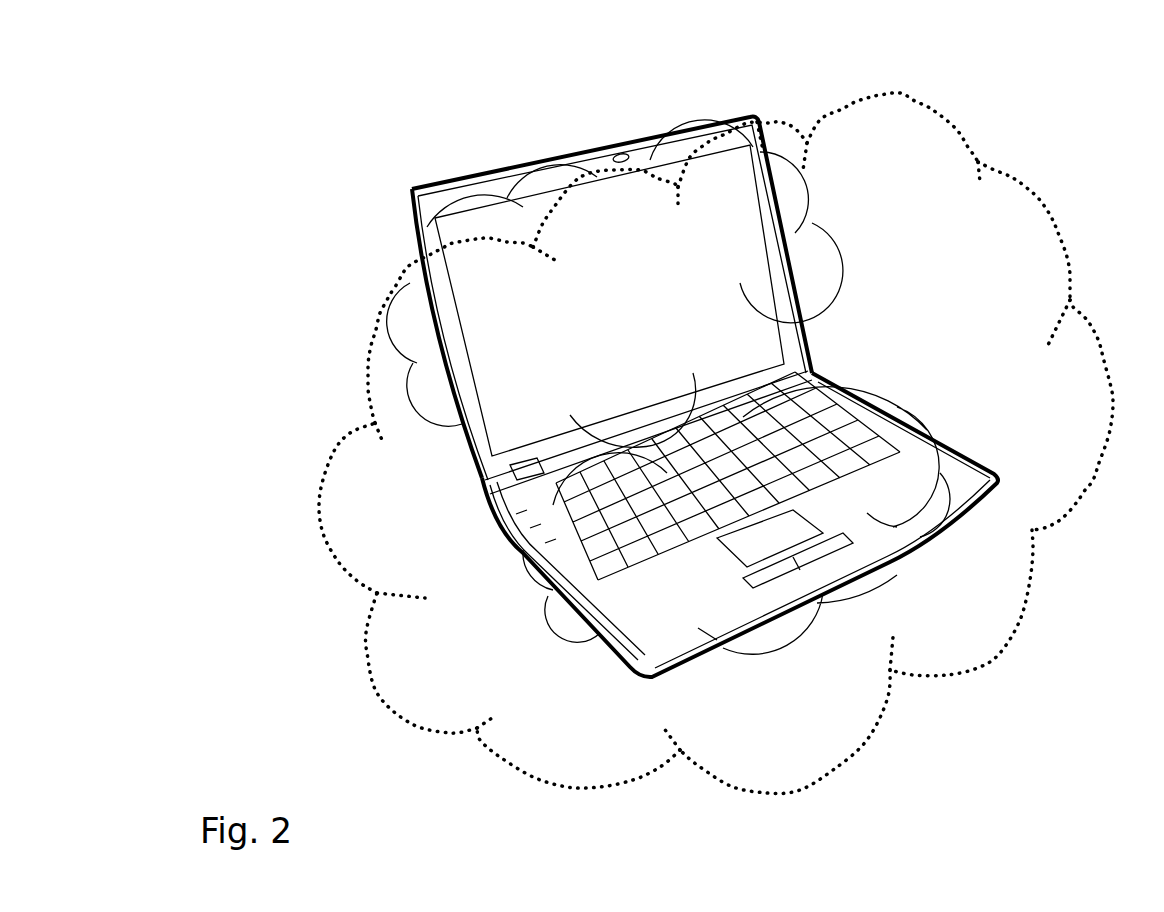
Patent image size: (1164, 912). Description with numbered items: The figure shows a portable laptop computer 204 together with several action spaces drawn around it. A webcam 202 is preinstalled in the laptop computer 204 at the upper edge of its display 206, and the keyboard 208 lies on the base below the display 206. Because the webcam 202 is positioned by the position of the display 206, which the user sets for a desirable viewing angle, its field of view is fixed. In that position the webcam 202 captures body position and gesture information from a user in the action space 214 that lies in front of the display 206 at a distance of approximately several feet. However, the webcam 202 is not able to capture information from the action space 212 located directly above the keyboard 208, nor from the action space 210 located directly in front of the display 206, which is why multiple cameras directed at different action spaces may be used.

The webcam 202 is at (610, 157).
The laptop computer 204 is at (972, 483).
The display 206 is at (750, 158).
The keyboard 208 is at (880, 430).
The action space 210 is at (428, 234).
The action space 212 is at (553, 627).
The action space 214 is at (347, 522).